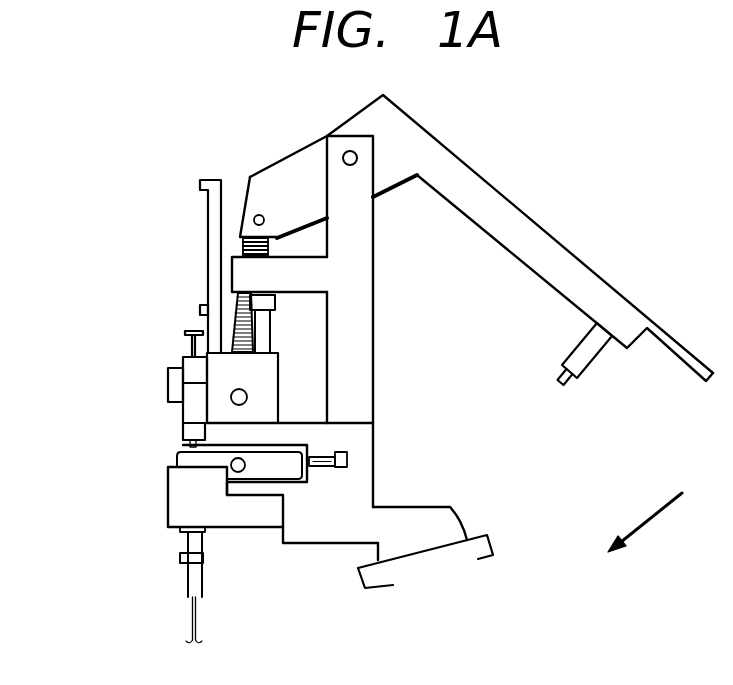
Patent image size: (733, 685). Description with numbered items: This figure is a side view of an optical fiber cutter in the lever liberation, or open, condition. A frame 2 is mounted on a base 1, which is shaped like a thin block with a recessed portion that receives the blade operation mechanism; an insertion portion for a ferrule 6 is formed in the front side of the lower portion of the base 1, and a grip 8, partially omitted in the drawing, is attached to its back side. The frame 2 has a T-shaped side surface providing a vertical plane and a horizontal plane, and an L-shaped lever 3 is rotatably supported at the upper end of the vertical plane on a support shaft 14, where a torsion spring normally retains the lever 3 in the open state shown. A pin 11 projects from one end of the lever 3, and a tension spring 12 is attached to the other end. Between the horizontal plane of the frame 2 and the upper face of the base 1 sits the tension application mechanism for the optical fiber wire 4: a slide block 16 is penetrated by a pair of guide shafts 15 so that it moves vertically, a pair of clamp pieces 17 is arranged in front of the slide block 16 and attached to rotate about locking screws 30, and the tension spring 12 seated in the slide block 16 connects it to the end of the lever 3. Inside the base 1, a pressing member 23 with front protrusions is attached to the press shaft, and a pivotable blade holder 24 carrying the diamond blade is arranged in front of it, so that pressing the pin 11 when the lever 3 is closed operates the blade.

The base 1 is at (362, 463).
The frame 2 is at (373, 268).
The lever 3 is at (551, 232).
The optical fiber wire 4 is at (188, 345).
The ferrule 6 is at (188, 542).
The grip 8 is at (467, 563).
The pin 11 is at (590, 360).
The tension spring 12 is at (238, 300).
The support shaft 14 is at (344, 155).
The guide shafts 15 is at (265, 327).
The slide block 16 is at (265, 378).
The clamp pieces 17 is at (190, 413).
The pressing member 23 is at (323, 463).
The blade holder 24 is at (262, 467).
The locking screws 30 is at (168, 384).